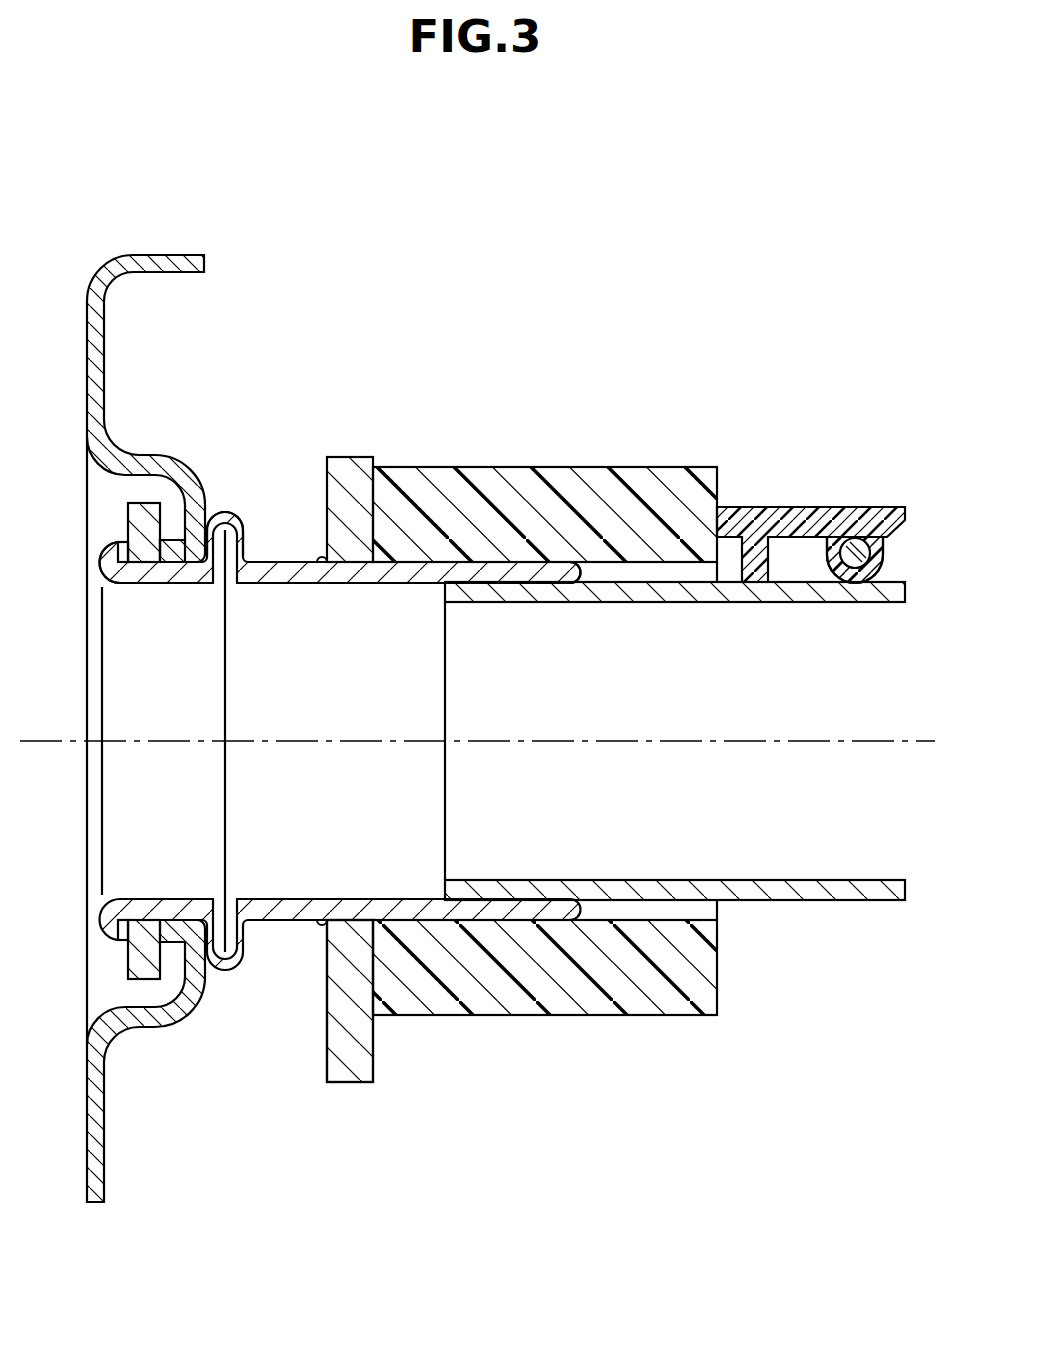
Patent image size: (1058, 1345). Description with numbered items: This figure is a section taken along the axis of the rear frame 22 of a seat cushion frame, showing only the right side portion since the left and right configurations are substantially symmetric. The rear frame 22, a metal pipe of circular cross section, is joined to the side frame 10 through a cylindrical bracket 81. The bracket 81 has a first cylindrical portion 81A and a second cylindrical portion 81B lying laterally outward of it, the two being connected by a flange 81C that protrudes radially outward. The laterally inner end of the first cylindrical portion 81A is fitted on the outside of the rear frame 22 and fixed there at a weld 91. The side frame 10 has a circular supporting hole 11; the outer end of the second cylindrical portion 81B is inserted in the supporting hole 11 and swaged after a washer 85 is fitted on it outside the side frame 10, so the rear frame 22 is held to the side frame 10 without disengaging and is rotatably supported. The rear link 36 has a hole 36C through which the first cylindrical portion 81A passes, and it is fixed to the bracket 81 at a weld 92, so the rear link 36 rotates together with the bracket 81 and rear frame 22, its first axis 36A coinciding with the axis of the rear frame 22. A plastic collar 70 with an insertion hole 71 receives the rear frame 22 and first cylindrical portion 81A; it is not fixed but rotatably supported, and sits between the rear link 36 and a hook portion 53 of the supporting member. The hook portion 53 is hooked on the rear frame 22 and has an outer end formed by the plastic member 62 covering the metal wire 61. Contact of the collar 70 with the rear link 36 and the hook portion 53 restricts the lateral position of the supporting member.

The side frame 10 is at (169, 250).
The supporting hole 11 is at (173, 567).
The rear frame 22 is at (792, 572).
The rear link 36 is at (363, 1060).
The first axis 36A is at (745, 740).
The hole 36C is at (355, 900).
The hook portion 53 is at (848, 507).
The metal wire 61 is at (855, 556).
The plastic member 62 is at (868, 568).
The collar 70 is at (597, 460).
The insertion hole 71 is at (682, 563).
The bracket 81 is at (282, 556).
The first cylindrical portion 81A is at (447, 573).
The second cylindrical portion 81B is at (140, 582).
The flange 81C is at (226, 517).
The washer 85 is at (138, 518).
The weld 91 is at (590, 573).
The weld 92 is at (320, 924).